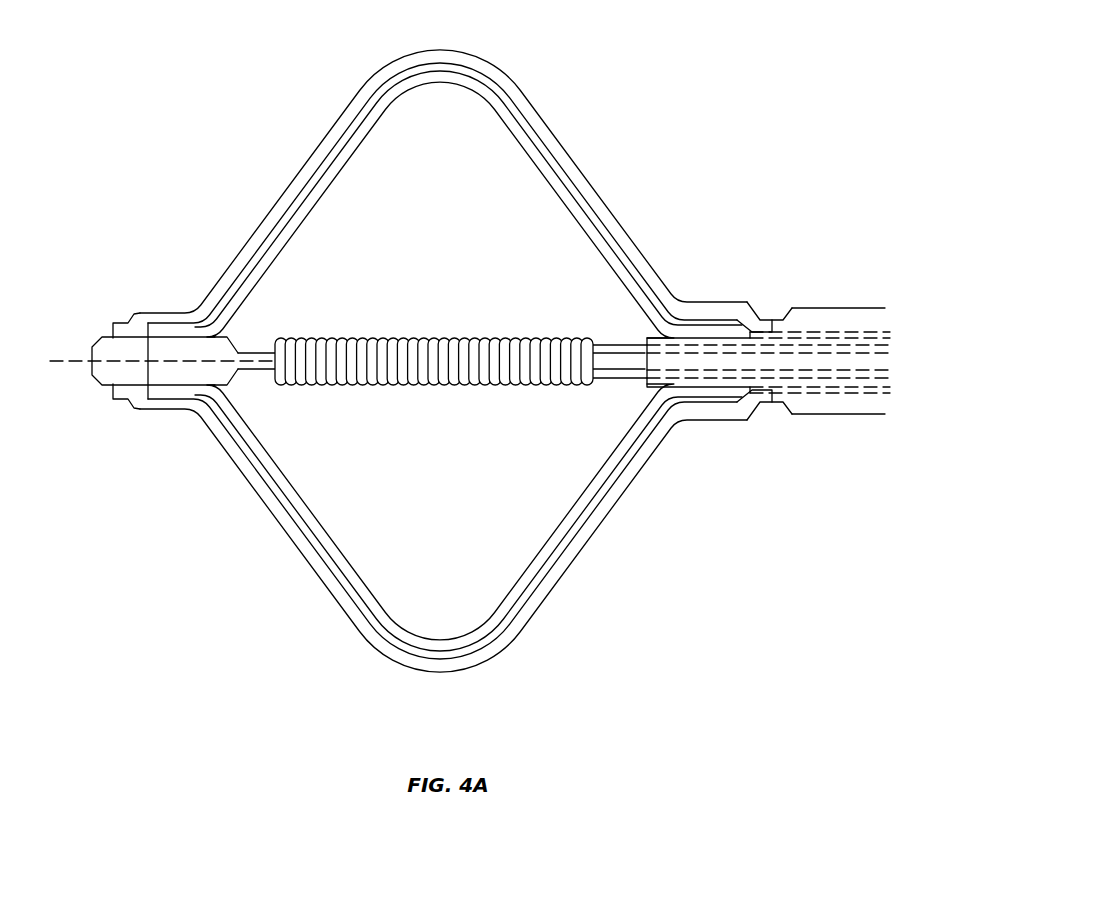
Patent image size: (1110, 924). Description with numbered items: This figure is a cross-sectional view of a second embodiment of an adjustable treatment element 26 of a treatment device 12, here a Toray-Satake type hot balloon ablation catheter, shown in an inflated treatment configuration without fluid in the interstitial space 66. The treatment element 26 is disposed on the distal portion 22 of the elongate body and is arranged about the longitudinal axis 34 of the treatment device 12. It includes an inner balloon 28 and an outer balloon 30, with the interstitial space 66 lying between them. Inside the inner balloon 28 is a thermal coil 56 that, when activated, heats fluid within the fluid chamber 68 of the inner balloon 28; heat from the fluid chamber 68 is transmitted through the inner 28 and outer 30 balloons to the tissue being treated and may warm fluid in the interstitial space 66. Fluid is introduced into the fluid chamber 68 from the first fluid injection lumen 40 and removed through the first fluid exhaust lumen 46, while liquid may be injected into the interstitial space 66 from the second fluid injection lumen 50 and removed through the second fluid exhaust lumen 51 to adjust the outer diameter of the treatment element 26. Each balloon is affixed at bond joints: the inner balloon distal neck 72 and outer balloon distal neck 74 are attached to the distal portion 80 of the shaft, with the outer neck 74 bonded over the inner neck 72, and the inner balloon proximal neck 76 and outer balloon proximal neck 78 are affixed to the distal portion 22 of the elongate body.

The treatment device 12 is at (148, 116).
The distal portion of the elongate body 22 is at (835, 306).
The treatment element 26 is at (331, 129).
The inner balloon 28 is at (628, 438).
The outer balloon 30 is at (598, 524).
The longitudinal axis 34 is at (57, 358).
The first fluid injection lumen 40 is at (784, 318).
The first fluid exhaust lumen 46 is at (845, 380).
The second fluid injection lumen 50 is at (738, 330).
The second fluid exhaust lumen 51 is at (738, 405).
The thermal coil 56 is at (440, 338).
The interstitial space 66 is at (548, 568).
The fluid chamber 68 is at (358, 488).
The inner balloon distal neck portion 72 is at (182, 390).
The outer balloon distal neck portion 74 is at (168, 322).
The inner balloon proximal neck portion 76 is at (670, 330).
The outer balloon proximal neck portion 78 is at (768, 347).
The distal portion of the shaft 80 is at (108, 352).